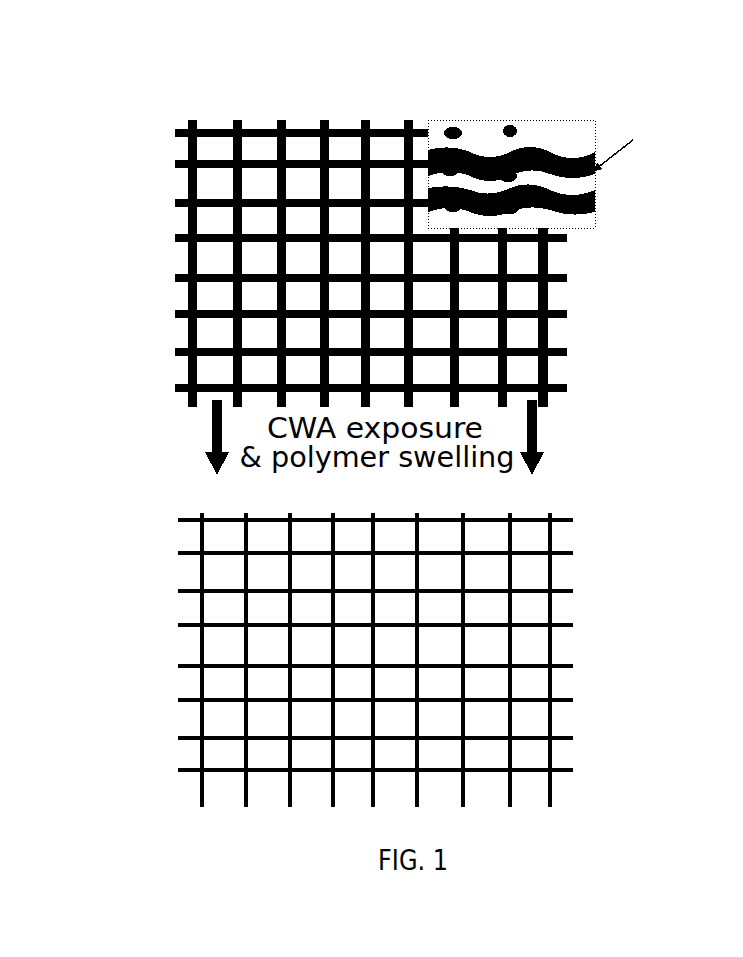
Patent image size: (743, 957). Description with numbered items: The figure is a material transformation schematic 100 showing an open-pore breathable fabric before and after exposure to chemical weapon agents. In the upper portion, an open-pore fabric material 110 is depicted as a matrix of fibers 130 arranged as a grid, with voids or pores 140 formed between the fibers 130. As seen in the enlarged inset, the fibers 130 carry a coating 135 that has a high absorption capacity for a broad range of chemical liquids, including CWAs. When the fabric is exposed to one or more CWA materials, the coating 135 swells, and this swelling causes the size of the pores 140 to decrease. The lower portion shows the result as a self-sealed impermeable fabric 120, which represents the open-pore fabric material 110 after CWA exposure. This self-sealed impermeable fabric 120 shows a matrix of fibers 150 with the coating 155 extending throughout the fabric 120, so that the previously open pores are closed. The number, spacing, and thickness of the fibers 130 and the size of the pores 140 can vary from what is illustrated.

The material transformation schematic 100 is at (397, 228).
The open-pore fabric material 110 is at (177, 183).
The fibers 130 is at (278, 123).
The coating 135 is at (322, 123).
The pores 140 is at (383, 147).
The self-sealed impermeable fabric 120 is at (370, 637).
The matrix of fibers 150 is at (550, 582).
The coating 155 is at (533, 535).